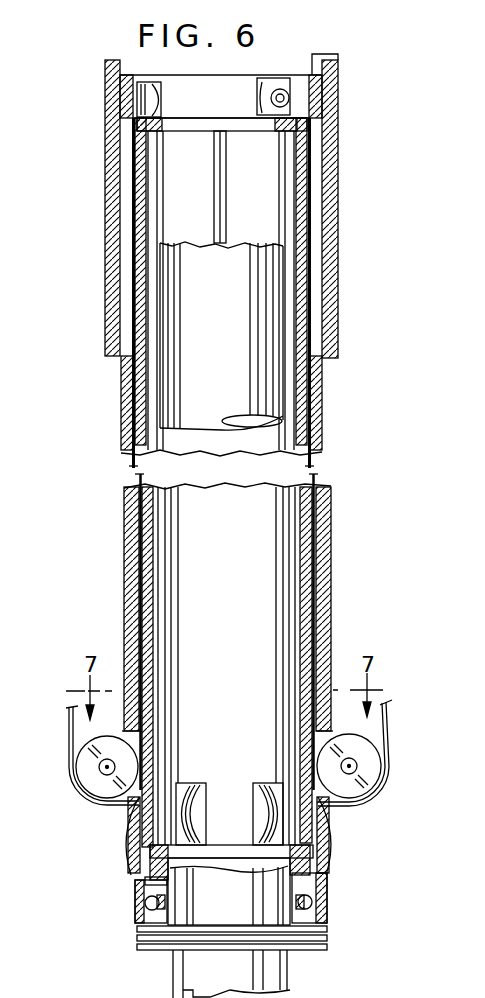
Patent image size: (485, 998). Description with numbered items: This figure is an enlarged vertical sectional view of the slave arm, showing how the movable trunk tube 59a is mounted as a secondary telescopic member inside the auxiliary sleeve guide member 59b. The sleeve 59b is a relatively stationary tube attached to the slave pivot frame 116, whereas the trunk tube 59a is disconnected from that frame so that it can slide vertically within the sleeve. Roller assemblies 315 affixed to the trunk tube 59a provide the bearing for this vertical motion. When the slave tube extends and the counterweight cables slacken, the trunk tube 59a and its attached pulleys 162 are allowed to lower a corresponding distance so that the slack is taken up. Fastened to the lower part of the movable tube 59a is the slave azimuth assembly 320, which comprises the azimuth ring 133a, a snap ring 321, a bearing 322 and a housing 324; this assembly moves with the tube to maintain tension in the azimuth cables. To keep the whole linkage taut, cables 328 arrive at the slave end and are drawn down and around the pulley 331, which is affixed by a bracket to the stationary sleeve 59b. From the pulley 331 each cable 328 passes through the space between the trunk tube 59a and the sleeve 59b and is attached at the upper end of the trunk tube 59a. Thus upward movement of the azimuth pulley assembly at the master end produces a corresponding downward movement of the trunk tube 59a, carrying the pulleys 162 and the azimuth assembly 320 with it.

The roller assemblies 315 is at (162, 107).
The slave pivot frame 116 is at (332, 208).
The auxiliary sleeve guide member 59b is at (323, 546).
The movable trunk tube 59a is at (305, 571).
The cables 328 is at (70, 731).
The pulley 331 is at (90, 775).
The pulleys 162 is at (258, 804).
The snap ring 321 is at (140, 880).
The bearing 322 is at (145, 900).
The housing 324 is at (328, 884).
The azimuth ring 133a is at (145, 950).
The slave azimuth assembly 320 is at (336, 949).